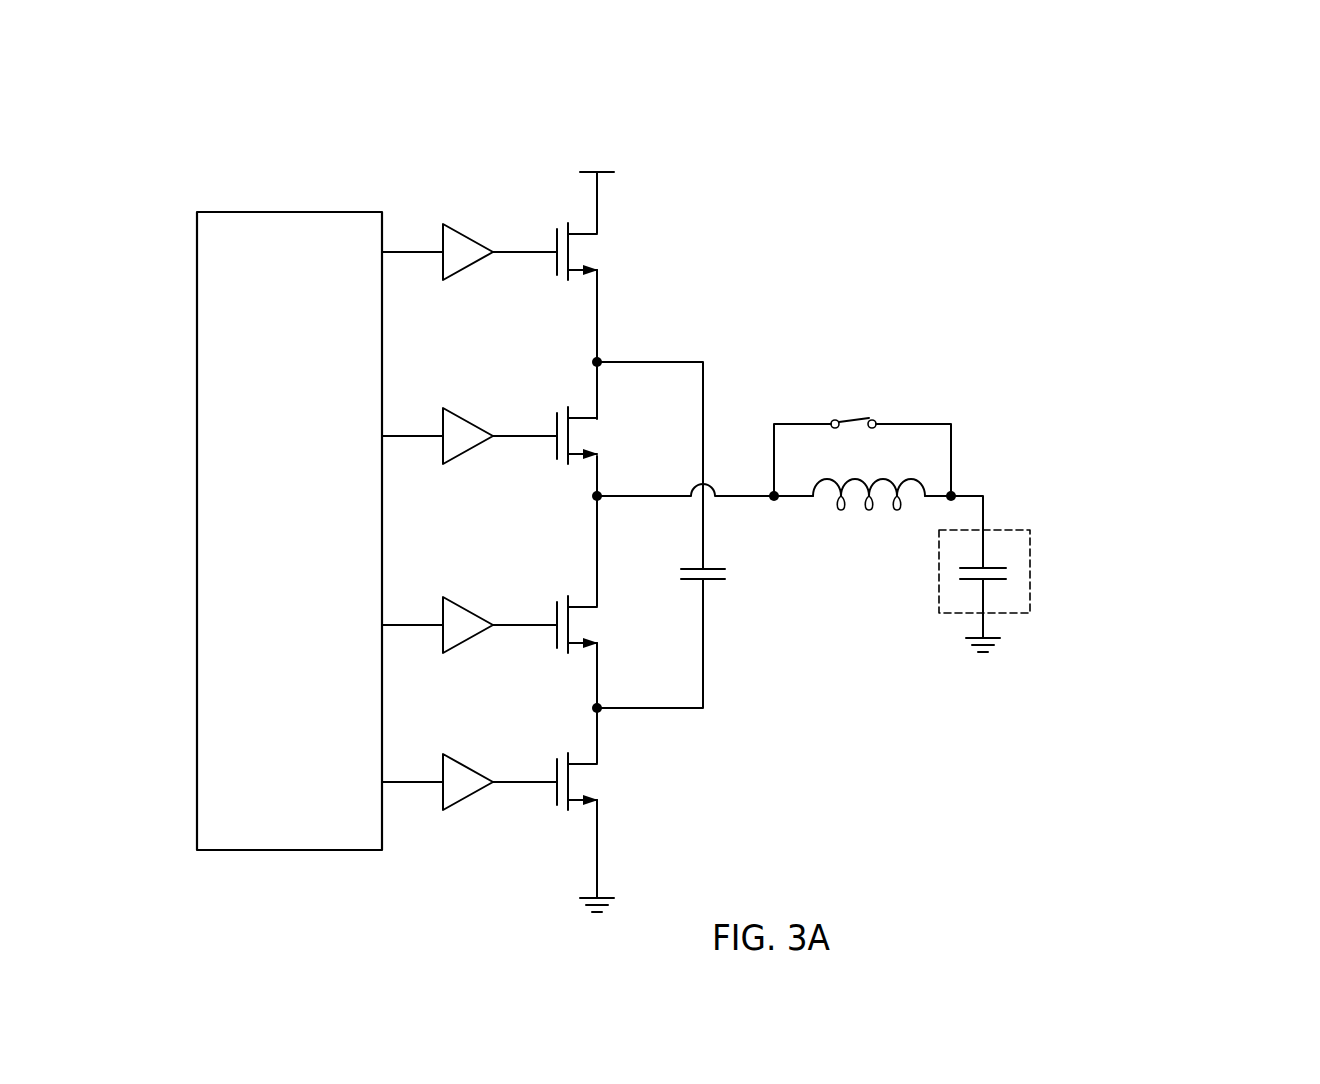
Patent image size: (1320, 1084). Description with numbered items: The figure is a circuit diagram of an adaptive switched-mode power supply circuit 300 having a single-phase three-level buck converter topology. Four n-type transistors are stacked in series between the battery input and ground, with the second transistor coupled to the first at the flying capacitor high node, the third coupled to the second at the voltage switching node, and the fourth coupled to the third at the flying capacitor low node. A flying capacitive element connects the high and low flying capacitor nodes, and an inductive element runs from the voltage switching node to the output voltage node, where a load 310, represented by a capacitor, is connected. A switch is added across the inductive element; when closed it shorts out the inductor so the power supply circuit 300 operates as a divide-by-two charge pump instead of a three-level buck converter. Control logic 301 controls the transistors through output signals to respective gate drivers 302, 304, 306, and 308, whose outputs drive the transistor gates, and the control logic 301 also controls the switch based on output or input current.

The power supply circuit 300 is at (440, 119).
The control logic 301 is at (345, 212).
The gate driver 302 is at (478, 262).
The gate driver 304 is at (478, 446).
The gate driver 306 is at (478, 635).
The gate driver 308 is at (478, 792).
The load 310 is at (939, 590).